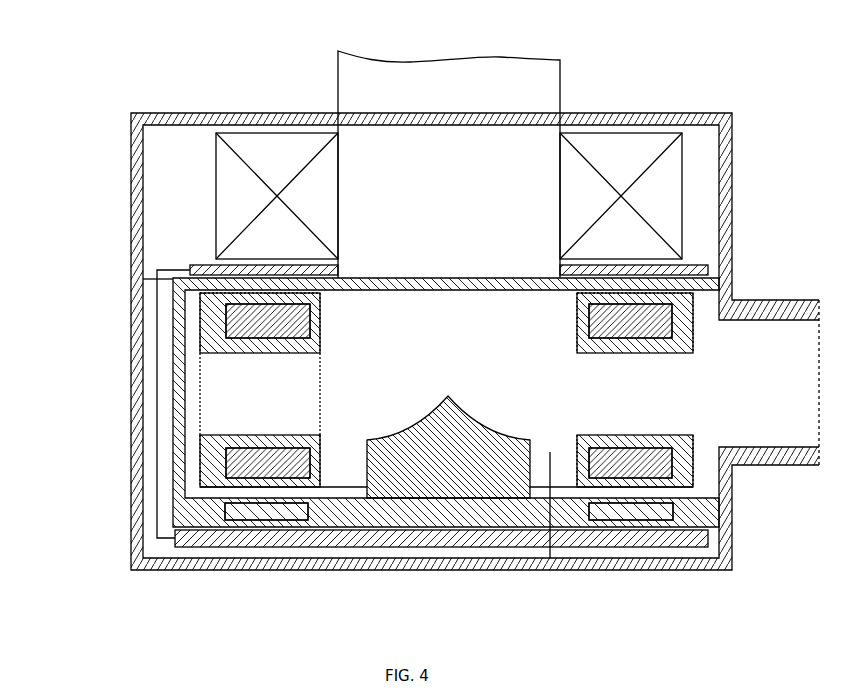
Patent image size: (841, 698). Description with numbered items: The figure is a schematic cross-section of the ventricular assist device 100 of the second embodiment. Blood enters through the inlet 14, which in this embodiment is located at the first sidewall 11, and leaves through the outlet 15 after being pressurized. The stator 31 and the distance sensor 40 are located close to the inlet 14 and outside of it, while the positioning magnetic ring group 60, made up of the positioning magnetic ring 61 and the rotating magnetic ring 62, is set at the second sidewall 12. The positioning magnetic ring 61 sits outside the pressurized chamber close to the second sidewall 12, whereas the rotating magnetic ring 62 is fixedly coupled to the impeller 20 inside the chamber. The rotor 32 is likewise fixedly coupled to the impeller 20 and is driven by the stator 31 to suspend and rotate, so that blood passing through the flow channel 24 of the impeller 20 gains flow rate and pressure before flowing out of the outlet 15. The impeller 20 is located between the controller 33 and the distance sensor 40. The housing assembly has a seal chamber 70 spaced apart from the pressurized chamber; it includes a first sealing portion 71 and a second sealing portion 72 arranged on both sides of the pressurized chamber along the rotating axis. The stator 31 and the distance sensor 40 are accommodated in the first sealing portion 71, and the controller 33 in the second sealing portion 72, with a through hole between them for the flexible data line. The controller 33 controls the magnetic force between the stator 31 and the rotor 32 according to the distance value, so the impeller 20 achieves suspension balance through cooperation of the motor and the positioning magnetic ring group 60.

The ventricular assist device 100 is at (134, 45).
The inlet 14 is at (509, 88).
The stator 31 is at (620, 155).
The distance sensor 40 is at (700, 264).
The seal chamber 70 is at (415, 341).
The first sealing portion 71 is at (175, 208).
The second sealing portion 72 is at (157, 547).
The outlet 15 is at (768, 407).
The first sidewall 11 is at (481, 291).
The impeller 20 is at (446, 390).
The rotor 32 is at (310, 322).
The flow channel 24 is at (302, 412).
The second sidewall 12 is at (340, 505).
The controller 33 is at (378, 542).
The positioning magnetic ring group 60 is at (449, 525).
The positioning magnetic ring 61 is at (604, 512).
The rotating magnetic ring 62 is at (560, 610).